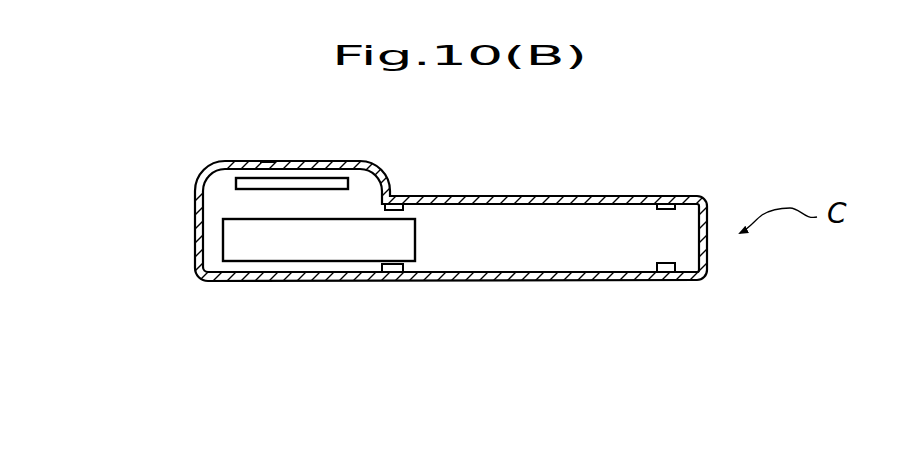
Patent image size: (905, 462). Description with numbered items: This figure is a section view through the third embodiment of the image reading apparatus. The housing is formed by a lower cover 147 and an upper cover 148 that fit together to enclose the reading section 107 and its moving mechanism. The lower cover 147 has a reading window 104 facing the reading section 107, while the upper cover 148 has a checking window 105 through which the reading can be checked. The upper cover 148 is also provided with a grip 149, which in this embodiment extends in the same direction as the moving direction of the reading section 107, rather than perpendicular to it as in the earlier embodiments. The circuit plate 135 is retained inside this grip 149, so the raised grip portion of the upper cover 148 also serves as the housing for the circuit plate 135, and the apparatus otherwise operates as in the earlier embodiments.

The checking window 105 is at (565, 196).
The reading window 104 is at (548, 281).
The grip 149 is at (267, 161).
The upper cover 148 is at (692, 196).
The lower cover 147 is at (698, 280).
The circuit plate 135 is at (237, 190).
The reading section 107 is at (307, 242).